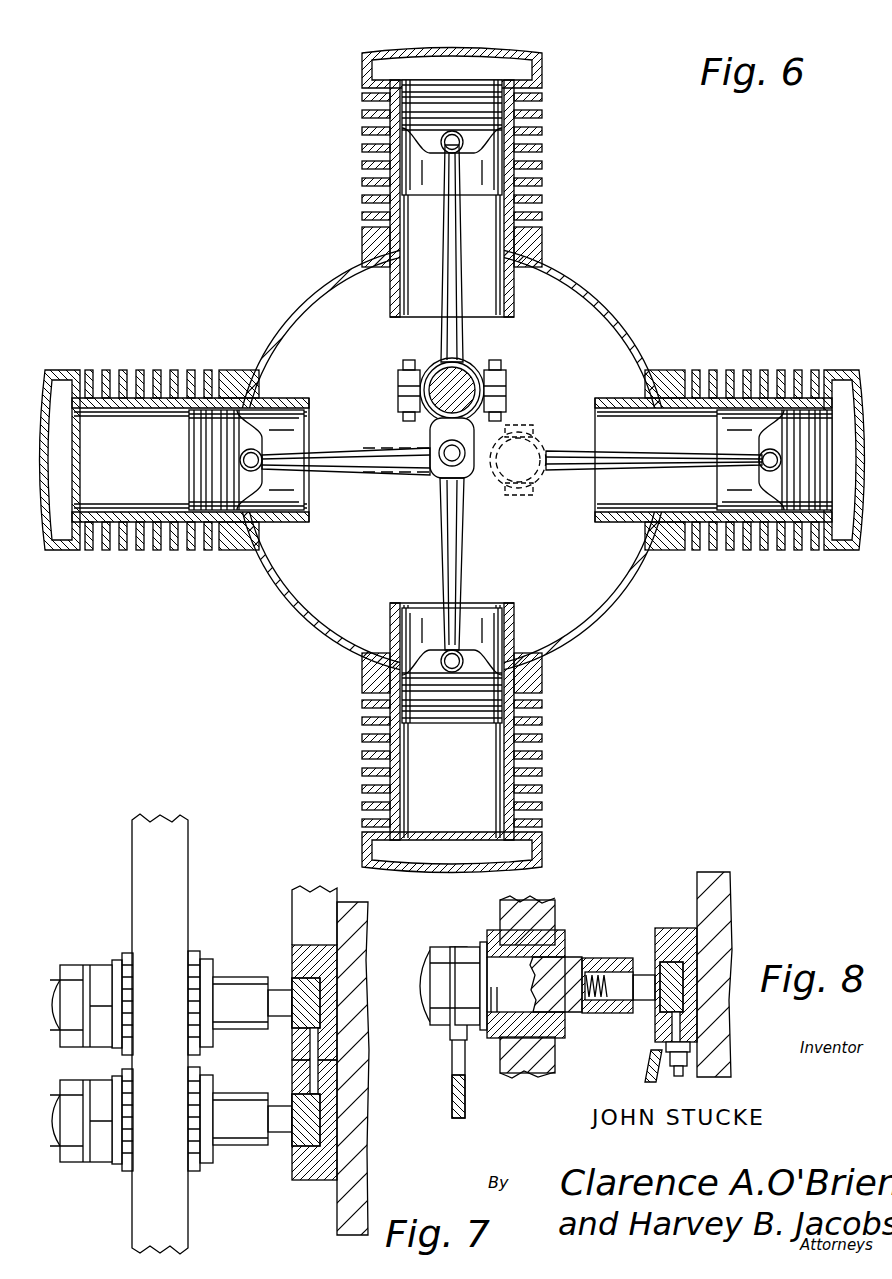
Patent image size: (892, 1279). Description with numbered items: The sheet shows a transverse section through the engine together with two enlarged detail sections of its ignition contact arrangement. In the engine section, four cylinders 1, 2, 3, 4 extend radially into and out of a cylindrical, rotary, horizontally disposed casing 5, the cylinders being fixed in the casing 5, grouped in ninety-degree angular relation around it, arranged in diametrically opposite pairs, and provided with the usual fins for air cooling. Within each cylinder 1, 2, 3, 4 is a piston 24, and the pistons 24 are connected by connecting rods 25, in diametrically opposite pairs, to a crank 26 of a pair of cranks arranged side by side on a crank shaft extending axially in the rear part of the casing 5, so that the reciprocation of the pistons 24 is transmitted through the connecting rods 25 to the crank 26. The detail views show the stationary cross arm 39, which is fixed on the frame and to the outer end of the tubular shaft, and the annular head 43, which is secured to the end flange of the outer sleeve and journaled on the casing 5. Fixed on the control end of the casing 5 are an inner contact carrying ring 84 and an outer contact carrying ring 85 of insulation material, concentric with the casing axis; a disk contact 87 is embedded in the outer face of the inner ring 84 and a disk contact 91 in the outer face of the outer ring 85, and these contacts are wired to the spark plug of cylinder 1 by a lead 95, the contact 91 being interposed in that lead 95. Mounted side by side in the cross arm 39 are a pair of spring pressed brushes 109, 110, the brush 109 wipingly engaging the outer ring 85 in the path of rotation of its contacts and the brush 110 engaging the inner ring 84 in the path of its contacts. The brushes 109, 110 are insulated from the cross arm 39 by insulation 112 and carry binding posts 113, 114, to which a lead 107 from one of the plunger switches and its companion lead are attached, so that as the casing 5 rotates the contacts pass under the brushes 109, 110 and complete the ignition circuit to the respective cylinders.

In FIG. 6, the cylinder 1 is at (413, 210).
In FIG. 6, the cylinder 2 is at (690, 426).
In FIG. 6, the cylinder 3 is at (135, 400).
In FIG. 6, the cylinder 4 is at (488, 778).
In FIG. 6, the casing 5 is at (607, 302).
In FIG. 6, the piston 24 is at (463, 152).
In FIG. 6, the connecting rod 25 is at (465, 331).
In FIG. 6, the crank 26 is at (460, 384).
In FIG. 7, the cross arm 39 is at (178, 859).
In FIG. 7, the annular head 43 is at (355, 1170).
In FIG. 8, the annular head 43 is at (728, 905).
In FIG. 7, the inner contact carrying ring 84 is at (312, 1181).
In FIG. 8, the inner contact carrying ring 84 is at (675, 928).
In FIG. 7, the outer contact carrying ring 85 is at (302, 945).
In FIG. 7, the disk contact 87 is at (296, 1028).
In FIG. 7, the disk contact 91 is at (300, 1142).
In FIG. 8, the lead 95 is at (661, 1076).
In FIG. 8, the lead 107 is at (466, 1106).
In FIG. 7, the brush 109 is at (234, 1098).
In FIG. 7, the brush 110 is at (232, 980).
In FIG. 8, the brush 110 is at (469, 935).
In FIG. 7, the insulation 112 is at (120, 948).
In FIG. 8, the insulation 112 is at (561, 1042).
In FIG. 7, the binding post 113 is at (62, 1150).
In FIG. 8, the binding post 113 is at (437, 1012).
In FIG. 7, the binding post 114 is at (62, 975).